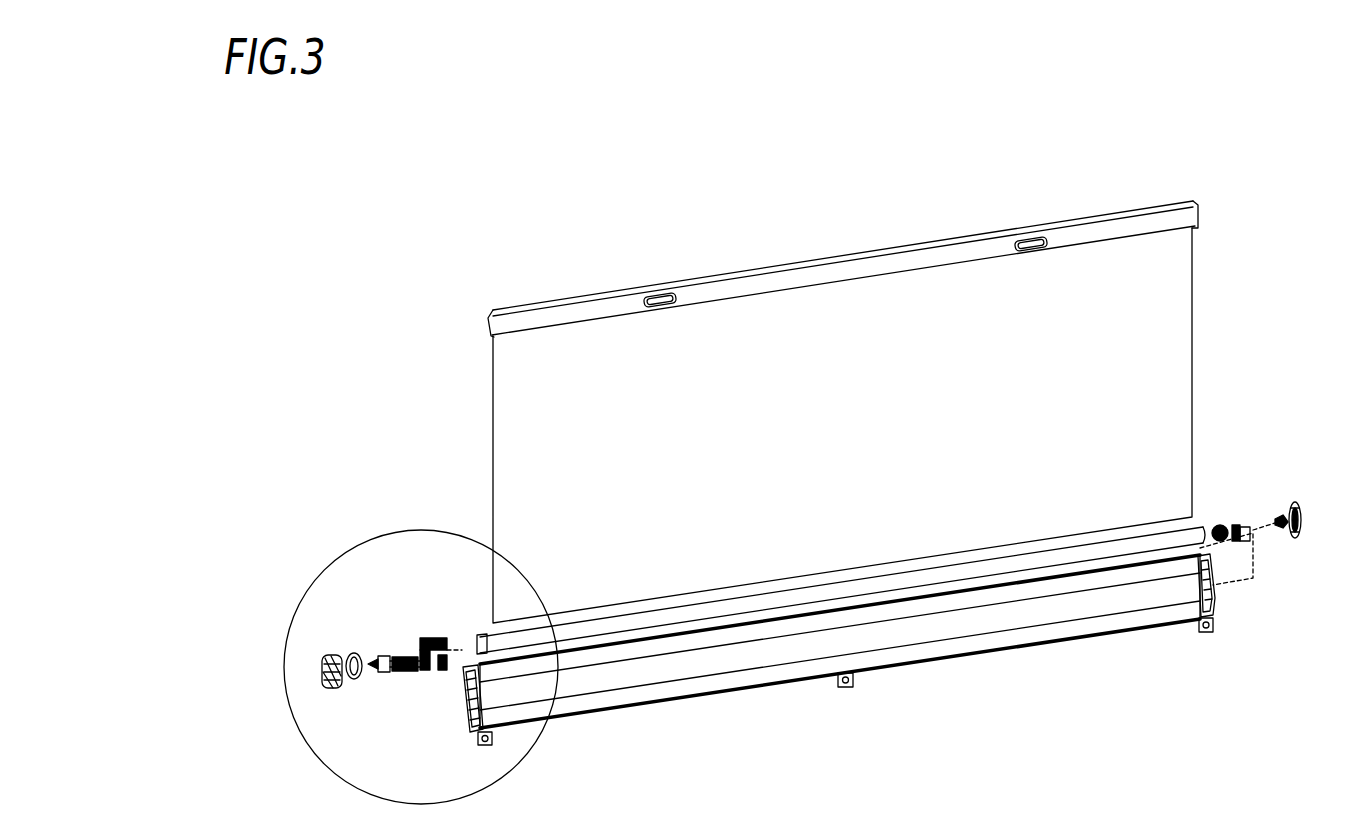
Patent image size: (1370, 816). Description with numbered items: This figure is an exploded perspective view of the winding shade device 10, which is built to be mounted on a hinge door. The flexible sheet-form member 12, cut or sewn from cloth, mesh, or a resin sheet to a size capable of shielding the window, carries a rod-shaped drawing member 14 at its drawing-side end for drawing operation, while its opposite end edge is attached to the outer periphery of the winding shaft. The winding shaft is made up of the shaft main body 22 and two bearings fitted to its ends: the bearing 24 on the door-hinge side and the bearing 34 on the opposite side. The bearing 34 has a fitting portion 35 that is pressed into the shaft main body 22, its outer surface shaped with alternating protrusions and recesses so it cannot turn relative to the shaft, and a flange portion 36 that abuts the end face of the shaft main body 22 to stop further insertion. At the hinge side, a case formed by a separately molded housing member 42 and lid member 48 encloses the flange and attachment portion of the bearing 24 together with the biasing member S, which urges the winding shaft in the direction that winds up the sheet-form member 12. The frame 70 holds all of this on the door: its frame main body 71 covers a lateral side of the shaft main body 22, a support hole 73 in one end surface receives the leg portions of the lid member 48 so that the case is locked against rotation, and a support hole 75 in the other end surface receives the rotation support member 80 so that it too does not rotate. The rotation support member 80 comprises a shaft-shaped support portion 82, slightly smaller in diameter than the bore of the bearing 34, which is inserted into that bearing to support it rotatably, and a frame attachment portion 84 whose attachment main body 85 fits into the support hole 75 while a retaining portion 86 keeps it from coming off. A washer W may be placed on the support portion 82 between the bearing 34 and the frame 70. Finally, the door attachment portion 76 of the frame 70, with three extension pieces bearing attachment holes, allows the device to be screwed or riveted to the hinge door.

The winding shade device 10 is at (1202, 148).
The sheet-form member 12 is at (1178, 283).
The drawing member 14 is at (1143, 218).
The shaft main body 22 is at (925, 562).
The bearing 24 is at (392, 672).
The bearing 34 is at (1226, 496).
The fitting portion 35 is at (1218, 524).
The flange portion 36 is at (1239, 509).
The washer W is at (1246, 528).
The housing member 42 is at (335, 690).
The biasing member S is at (353, 652).
The lid member 48 is at (441, 672).
The frame 70 is at (840, 641).
The frame main body 71 is at (1036, 636).
The support hole 73 is at (470, 707).
The support hole 75 is at (1214, 600).
The door attachment portion 76 is at (484, 747).
The rotation support member 80 is at (1302, 562).
The support portion 82 is at (1280, 532).
The frame attachment portion 84 is at (1266, 598).
The attachment main body 85 is at (1297, 532).
The retaining portion 86 is at (1302, 508).